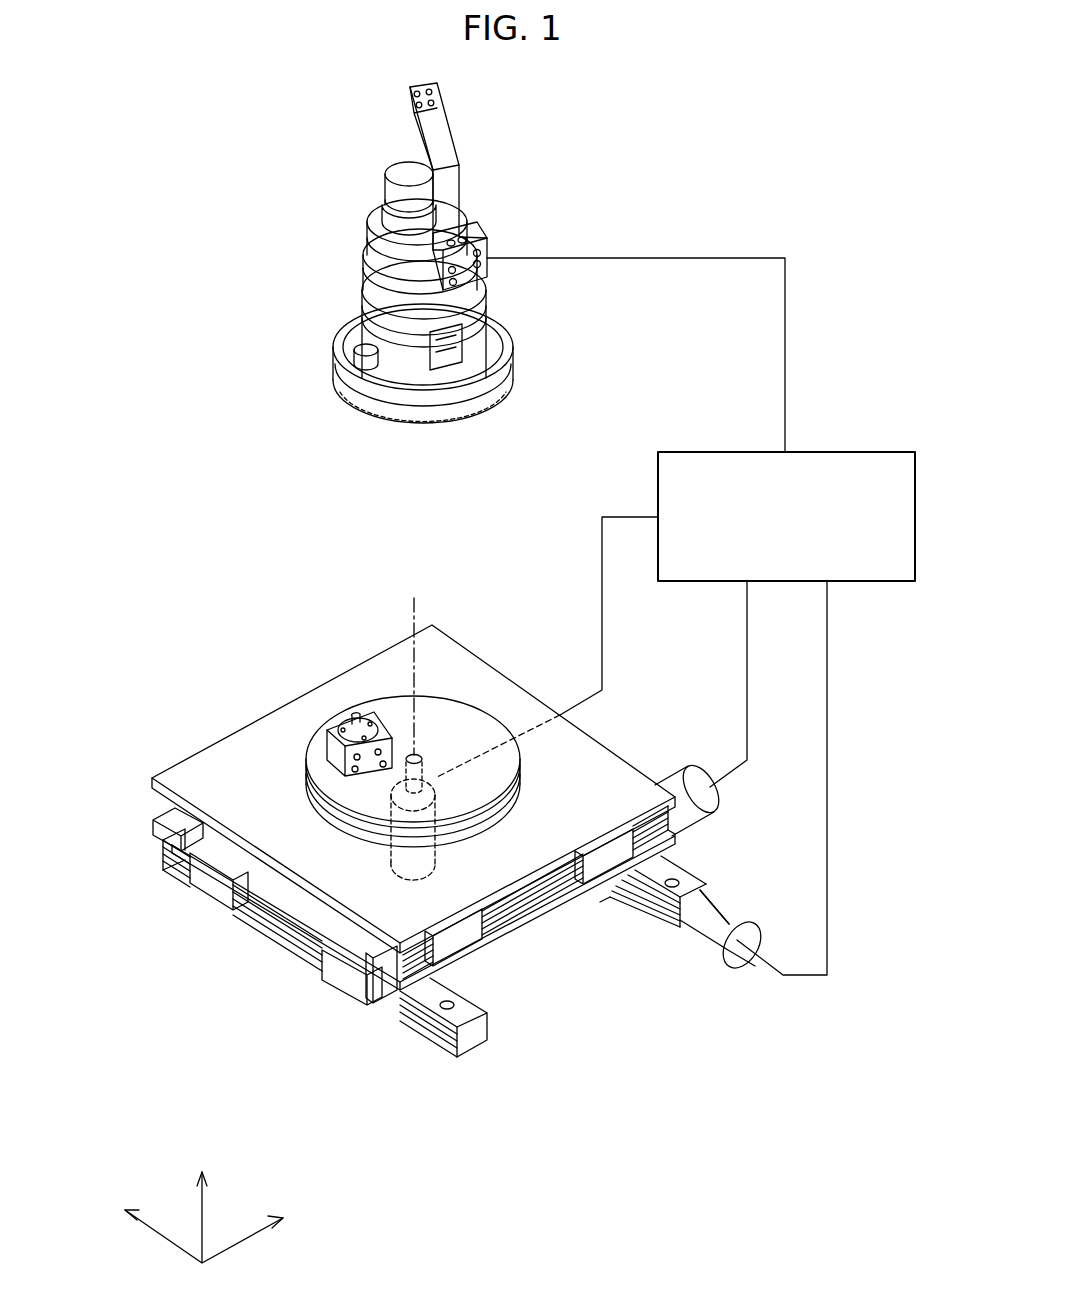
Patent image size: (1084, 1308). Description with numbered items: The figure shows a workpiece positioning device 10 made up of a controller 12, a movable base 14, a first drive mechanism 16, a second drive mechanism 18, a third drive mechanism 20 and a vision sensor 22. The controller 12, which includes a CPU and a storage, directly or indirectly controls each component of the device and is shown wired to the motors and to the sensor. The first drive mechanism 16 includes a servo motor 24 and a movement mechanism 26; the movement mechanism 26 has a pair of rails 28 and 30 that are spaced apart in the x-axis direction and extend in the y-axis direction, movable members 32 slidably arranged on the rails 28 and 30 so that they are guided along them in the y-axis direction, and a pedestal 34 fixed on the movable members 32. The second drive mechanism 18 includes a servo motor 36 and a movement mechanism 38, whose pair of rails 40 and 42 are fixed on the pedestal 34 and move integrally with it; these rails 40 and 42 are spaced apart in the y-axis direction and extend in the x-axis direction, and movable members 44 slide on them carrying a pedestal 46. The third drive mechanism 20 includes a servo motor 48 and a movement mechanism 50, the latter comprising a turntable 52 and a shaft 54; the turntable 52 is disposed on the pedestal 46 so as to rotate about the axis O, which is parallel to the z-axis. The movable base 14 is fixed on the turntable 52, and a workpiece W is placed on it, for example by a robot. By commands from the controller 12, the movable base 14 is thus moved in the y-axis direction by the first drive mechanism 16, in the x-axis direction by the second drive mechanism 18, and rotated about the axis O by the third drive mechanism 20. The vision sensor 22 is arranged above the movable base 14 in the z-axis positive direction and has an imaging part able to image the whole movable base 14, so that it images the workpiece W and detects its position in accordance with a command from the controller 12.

The workpiece positioning device 10 is at (889, 158).
The controller 12 is at (868, 452).
The movable base 14 is at (478, 720).
The first drive mechanism 16 is at (672, 948).
The second drive mechanism 18 is at (653, 762).
The third drive mechanism 20 is at (307, 817).
The vision sensor 22 is at (363, 240).
The servo motor 24 is at (723, 917).
The movement mechanism 26 is at (650, 914).
The rail 28 is at (678, 865).
The rail 30 is at (433, 1040).
The movable members 32 is at (212, 880).
The pedestal 34 is at (292, 900).
The servo motor 36 is at (693, 780).
The movement mechanism 38 is at (525, 908).
The rail 40 is at (187, 817).
The rail 42 is at (390, 960).
The movable members 44 is at (595, 863).
The pedestal 46 is at (228, 770).
The servo motor 48 is at (442, 858).
The movement mechanism 50 is at (394, 849).
The turntable 52 is at (480, 833).
The shaft 54 is at (430, 770).
The workpiece W is at (347, 712).